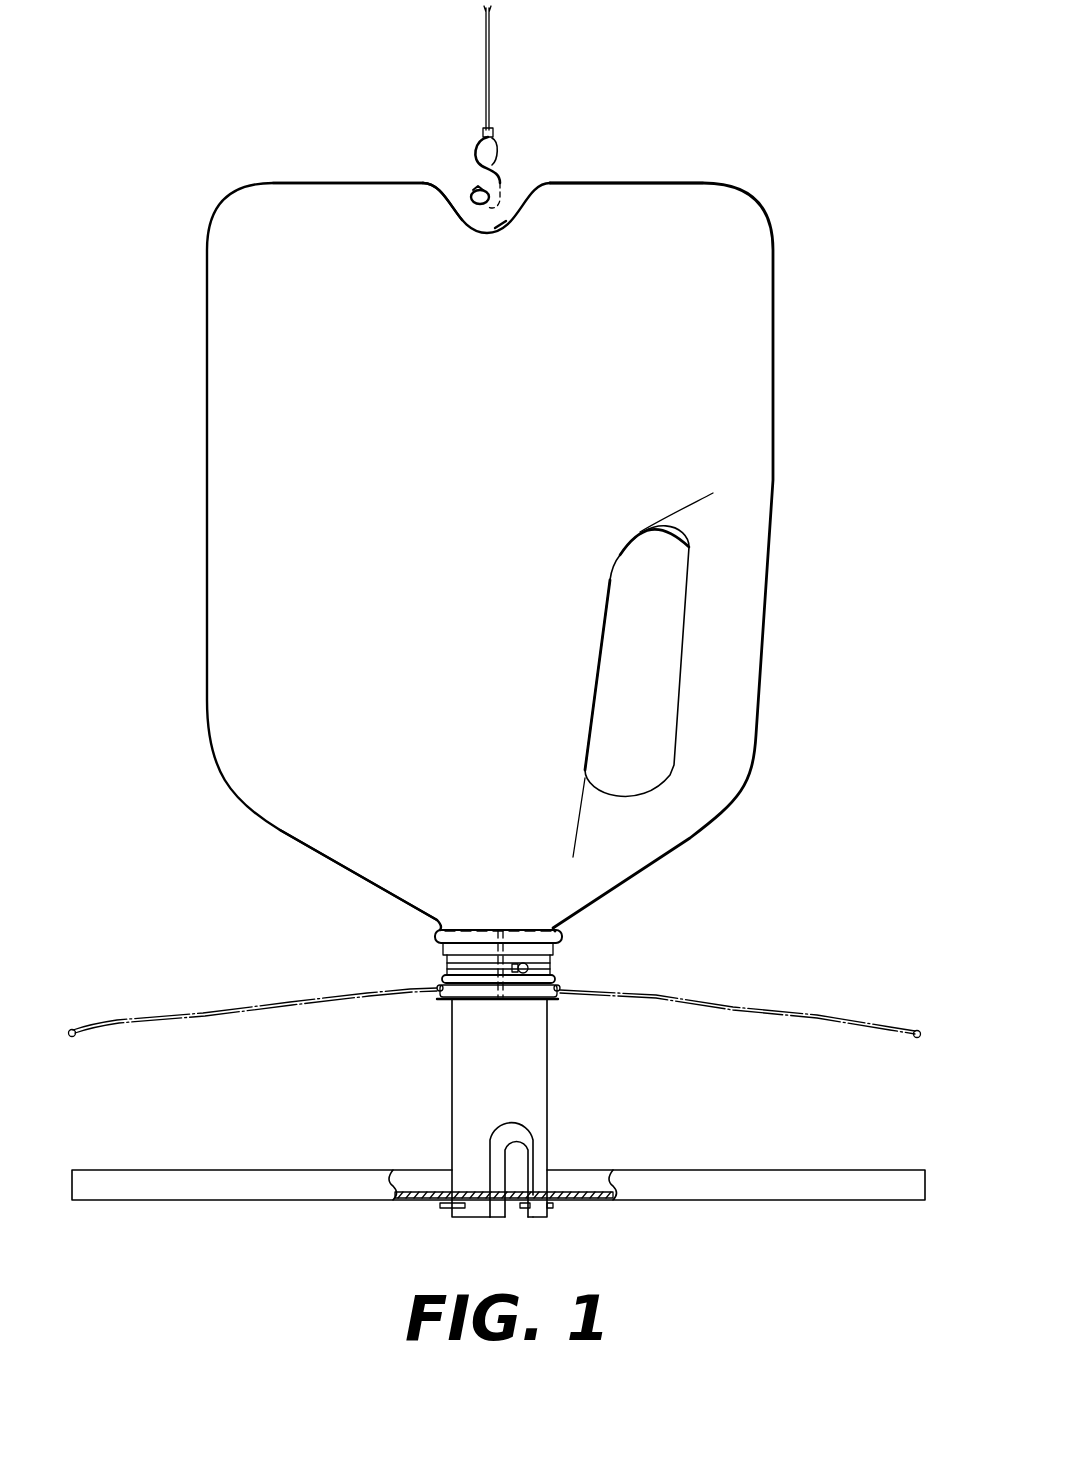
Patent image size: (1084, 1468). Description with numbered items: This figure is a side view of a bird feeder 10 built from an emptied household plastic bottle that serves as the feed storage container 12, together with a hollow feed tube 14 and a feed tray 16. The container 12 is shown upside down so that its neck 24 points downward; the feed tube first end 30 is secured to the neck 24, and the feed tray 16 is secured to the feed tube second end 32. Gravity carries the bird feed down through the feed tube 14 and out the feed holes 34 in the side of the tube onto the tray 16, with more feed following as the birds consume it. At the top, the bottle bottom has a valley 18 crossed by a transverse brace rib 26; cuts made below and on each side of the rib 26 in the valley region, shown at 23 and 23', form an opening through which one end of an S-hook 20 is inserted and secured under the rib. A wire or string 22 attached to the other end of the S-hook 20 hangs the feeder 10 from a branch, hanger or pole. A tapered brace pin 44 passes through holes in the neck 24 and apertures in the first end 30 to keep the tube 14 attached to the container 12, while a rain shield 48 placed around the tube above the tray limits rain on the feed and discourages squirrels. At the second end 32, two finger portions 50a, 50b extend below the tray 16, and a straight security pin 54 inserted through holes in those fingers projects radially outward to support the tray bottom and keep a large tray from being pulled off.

The bird feeder 10 is at (868, 248).
The feed storage container 12 is at (655, 212).
The feed tube 14 is at (540, 1057).
The feed tray 16 is at (790, 1170).
The valley 18 is at (472, 206).
The S-hook 20 is at (498, 152).
The wire or string 22 is at (489, 48).
The recess 23 is at (501, 208).
The recess wall 23' is at (438, 183).
The neck 24 is at (555, 957).
The brace rib 26 is at (522, 188).
The feed tube first end 30 is at (432, 918).
The feed tube second end 32 is at (512, 1238).
The feed holes 34 is at (507, 1153).
The brace pin 44 is at (530, 965).
The rain shield 48 is at (747, 1003).
The finger portion 50a is at (458, 1213).
The finger portion 50b is at (543, 1217).
The security pin 54 is at (553, 1205).